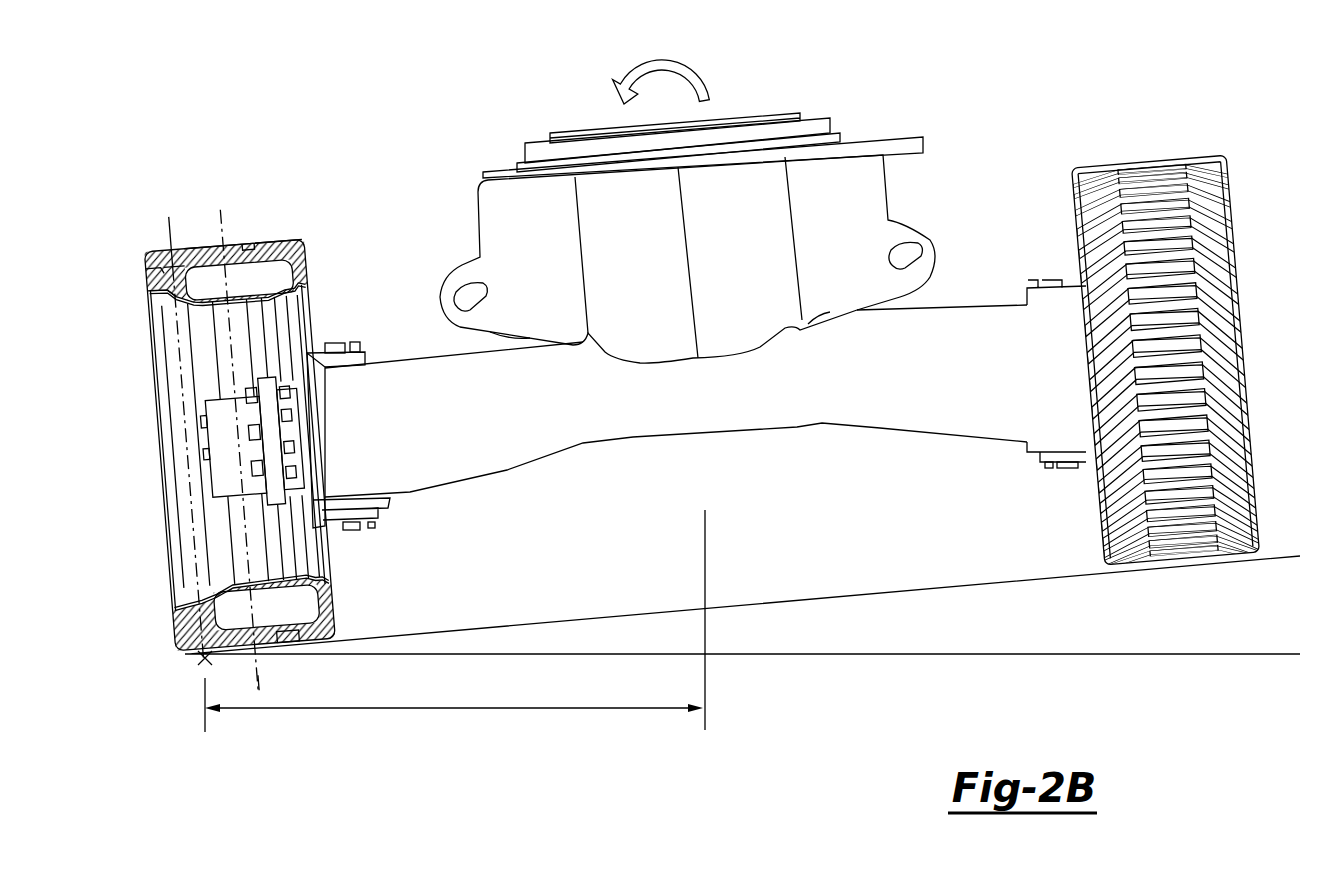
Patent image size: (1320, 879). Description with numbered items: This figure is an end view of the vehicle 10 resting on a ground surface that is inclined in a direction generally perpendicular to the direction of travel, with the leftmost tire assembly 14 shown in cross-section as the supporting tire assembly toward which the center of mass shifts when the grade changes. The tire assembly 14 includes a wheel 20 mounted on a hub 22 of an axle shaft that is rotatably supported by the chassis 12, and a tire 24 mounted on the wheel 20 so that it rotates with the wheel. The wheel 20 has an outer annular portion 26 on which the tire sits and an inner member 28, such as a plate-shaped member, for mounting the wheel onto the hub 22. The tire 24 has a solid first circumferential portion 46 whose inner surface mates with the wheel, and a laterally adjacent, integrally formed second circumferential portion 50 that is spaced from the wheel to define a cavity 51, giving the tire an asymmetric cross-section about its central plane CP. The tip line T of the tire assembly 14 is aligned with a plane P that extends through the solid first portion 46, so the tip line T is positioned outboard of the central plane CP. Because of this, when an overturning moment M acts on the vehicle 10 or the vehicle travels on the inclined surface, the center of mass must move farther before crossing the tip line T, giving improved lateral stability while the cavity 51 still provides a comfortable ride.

The vehicle 10 is at (382, 124).
The chassis 12 is at (872, 461).
The tire assembly 14 is at (165, 186).
The wheel 20 is at (178, 580).
The hub 22 is at (227, 432).
The tire 24 is at (212, 240).
The outer annular portion 26 is at (193, 302).
The inner member 28 is at (260, 336).
The first circumferential portion 46 is at (157, 272).
The second circumferential portion 50 is at (247, 253).
The cavity 51 is at (276, 271).
The plane P is at (163, 233).
The overturning moment M is at (705, 62).
The tip line T is at (177, 669).
The central plane CP is at (265, 678).